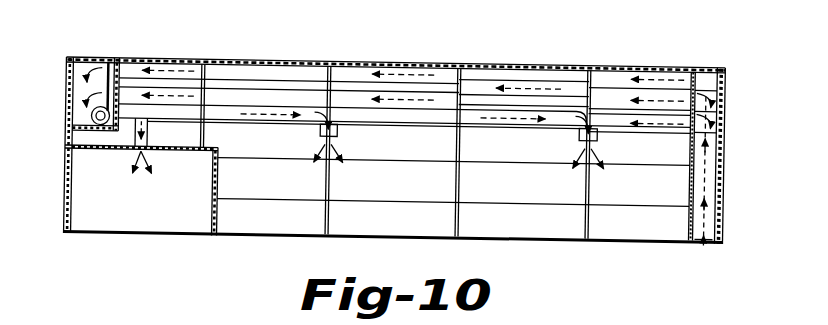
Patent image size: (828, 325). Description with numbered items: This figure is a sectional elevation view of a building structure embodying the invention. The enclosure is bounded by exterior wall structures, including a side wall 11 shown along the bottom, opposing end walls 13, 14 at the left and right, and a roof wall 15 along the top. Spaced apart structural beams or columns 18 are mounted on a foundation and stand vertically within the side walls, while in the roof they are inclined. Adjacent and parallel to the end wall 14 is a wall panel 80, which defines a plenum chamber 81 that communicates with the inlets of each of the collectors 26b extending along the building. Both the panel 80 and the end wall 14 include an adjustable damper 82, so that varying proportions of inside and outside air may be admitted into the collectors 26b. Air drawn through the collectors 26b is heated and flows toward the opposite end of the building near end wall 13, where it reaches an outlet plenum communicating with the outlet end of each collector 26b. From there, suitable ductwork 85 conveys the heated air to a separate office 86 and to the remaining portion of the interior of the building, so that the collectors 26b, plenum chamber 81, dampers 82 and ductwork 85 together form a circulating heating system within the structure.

The side wall 11 is at (290, 238).
The end wall 13 is at (62, 172).
The end wall 14 is at (712, 248).
The roof wall 15 is at (185, 56).
The structural beam 18 is at (456, 217).
The collector 26b is at (309, 64).
The wall panel 80 is at (689, 188).
The plenum chamber 81 is at (698, 246).
The adjustable damper 82 is at (737, 222).
The ductwork 85 is at (433, 118).
The office 86 is at (158, 224).